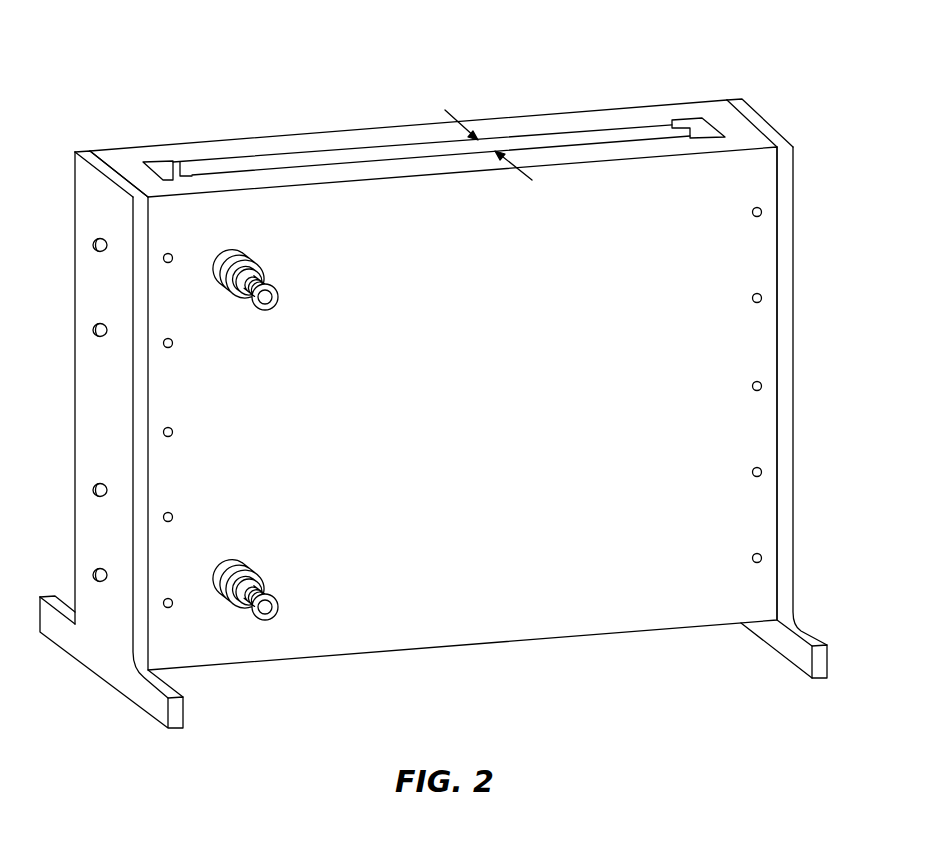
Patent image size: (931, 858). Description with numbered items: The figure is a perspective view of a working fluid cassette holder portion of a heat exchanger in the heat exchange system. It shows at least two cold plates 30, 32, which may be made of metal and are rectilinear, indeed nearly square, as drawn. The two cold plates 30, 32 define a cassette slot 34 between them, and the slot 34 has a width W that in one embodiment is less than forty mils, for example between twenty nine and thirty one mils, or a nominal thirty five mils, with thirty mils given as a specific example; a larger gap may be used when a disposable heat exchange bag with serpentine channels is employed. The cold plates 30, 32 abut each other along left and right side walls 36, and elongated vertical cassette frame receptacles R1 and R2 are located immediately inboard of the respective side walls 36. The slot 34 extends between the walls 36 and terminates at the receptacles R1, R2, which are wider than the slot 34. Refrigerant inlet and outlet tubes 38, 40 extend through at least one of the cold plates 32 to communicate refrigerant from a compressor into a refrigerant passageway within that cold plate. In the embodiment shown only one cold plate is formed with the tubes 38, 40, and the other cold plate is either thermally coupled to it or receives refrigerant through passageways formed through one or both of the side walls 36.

The cold plate 30 is at (570, 123).
The cold plate 32 is at (733, 128).
The cassette slot 34 is at (323, 158).
The side walls 36 is at (137, 175).
The refrigerant inlet tube 38 is at (270, 285).
The refrigerant outlet tube 40 is at (272, 593).
The cassette frame receptacle R1 is at (158, 162).
The cassette frame receptacle R2 is at (690, 118).
The slot width W is at (475, 135).